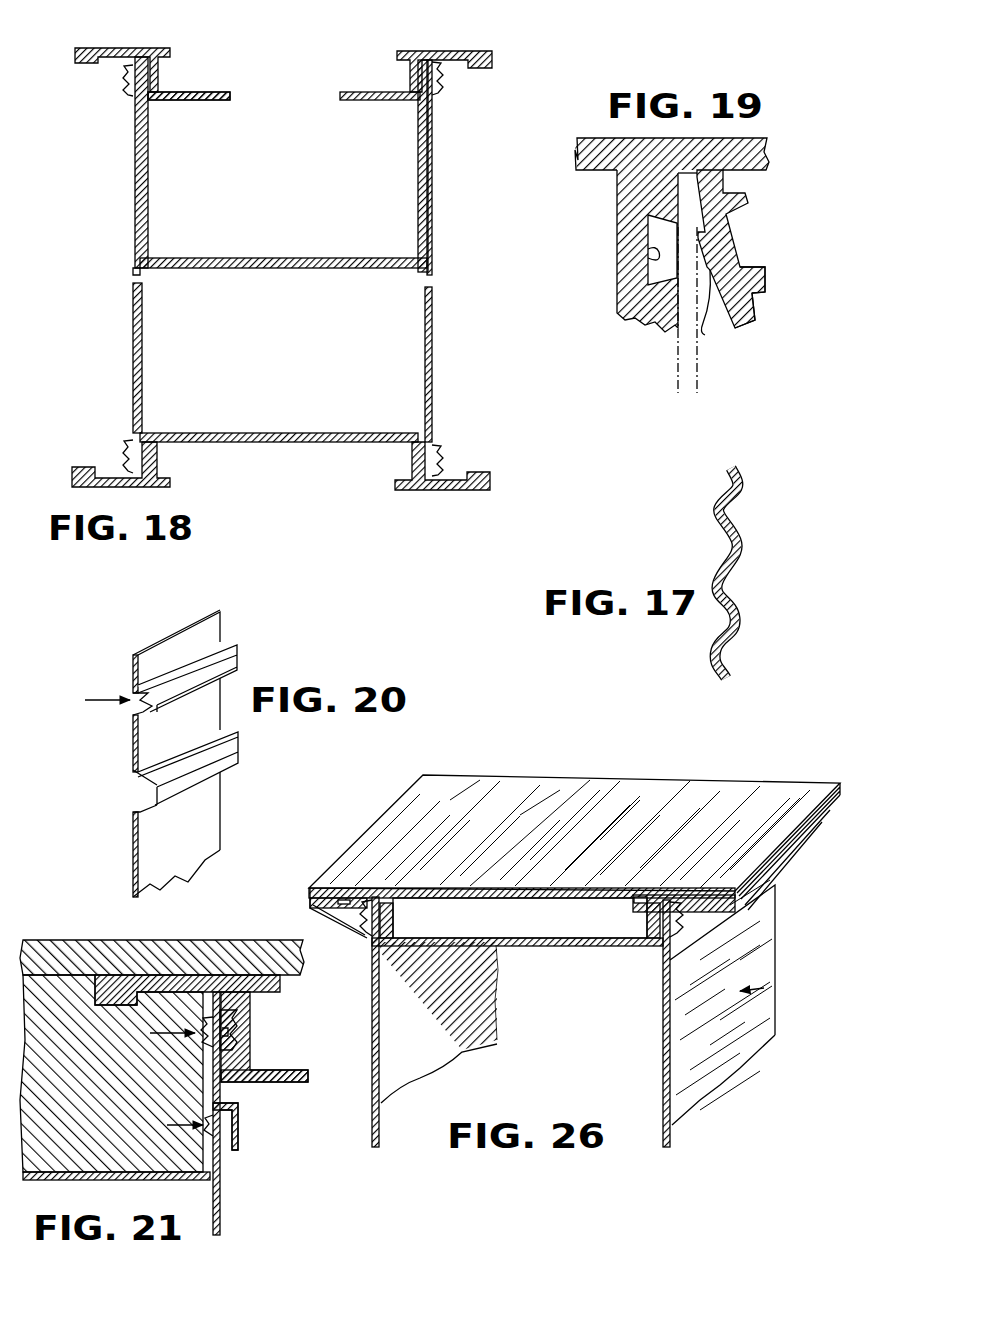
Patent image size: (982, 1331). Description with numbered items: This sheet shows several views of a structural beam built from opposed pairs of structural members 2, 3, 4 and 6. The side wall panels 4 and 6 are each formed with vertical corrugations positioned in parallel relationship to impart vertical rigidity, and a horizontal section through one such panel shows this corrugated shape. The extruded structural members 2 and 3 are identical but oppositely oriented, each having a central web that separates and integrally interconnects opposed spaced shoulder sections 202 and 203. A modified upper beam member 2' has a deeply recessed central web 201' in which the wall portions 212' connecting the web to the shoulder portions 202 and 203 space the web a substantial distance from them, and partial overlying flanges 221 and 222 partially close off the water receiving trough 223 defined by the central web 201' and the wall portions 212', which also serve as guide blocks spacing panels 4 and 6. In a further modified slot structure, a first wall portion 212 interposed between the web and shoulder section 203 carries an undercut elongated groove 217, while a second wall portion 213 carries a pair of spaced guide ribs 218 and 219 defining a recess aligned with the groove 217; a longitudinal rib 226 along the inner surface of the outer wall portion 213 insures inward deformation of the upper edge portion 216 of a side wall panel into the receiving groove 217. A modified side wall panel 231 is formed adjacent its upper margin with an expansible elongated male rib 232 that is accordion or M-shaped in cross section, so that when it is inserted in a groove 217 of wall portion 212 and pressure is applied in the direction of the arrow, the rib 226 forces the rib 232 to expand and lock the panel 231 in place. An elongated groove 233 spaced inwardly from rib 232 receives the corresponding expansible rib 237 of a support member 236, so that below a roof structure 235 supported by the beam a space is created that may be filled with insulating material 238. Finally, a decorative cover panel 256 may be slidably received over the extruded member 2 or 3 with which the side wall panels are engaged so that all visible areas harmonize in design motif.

In FIG. 19, the structural member 2 is at (557, 158).
In FIG. 21, the structural member 2 is at (271, 1062).
In FIG. 26, the structural member 2 is at (517, 964).
In FIG. 18, the upper beam structural member 2' is at (189, 70).
In FIG. 18, the structural member 3 is at (282, 432).
In FIG. 18, the side wall panel 4 is at (133, 350).
In FIG. 26, the side wall panel 4 is at (455, 1065).
In FIG. 17, the side wall panel 6 is at (735, 528).
In FIG. 18, the side wall panel 6 is at (434, 263).
In FIG. 26, the side wall panel 6 is at (668, 996).
In FIG. 18, the central web 201' is at (280, 247).
In FIG. 18, the shoulder section 202 is at (153, 47).
In FIG. 26, the shoulder section 202 is at (359, 900).
In FIG. 18, the shoulder section 203 is at (470, 51).
In FIG. 19, the shoulder section 203 is at (765, 140).
In FIG. 21, the shoulder section 203 is at (165, 985).
In FIG. 26, the shoulder section 203 is at (698, 900).
In FIG. 19, the first wall portion 212 is at (621, 251).
In FIG. 21, the first wall portion 212 is at (264, 1037).
In FIG. 26, the first wall portion 212 is at (520, 918).
In FIG. 18, the wall portion 212' is at (281, 164).
In FIG. 19, the second wall portion 213 is at (752, 319).
In FIG. 21, the second wall portion 213 is at (203, 1013).
In FIG. 26, the second wall portion 213 is at (368, 930).
In FIG. 19, the upper edge portion 216 is at (680, 345).
In FIG. 19, the elongated groove 217 is at (653, 252).
In FIG. 21, the elongated groove 217 is at (237, 1040).
In FIG. 19, the guide rib 218 is at (740, 202).
In FIG. 19, the guide rib 219 is at (767, 277).
In FIG. 18, the partial overlying flange 221 is at (200, 100).
In FIG. 18, the partial overlying flange 222 is at (373, 78).
In FIG. 18, the water receiving trough 223 is at (298, 176).
In FIG. 19, the longitudinal rib 226 is at (720, 317).
In FIG. 21, the longitudinal rib 226 is at (218, 1033).
In FIG. 20, the side wall panel 231 is at (133, 750).
In FIG. 21, the side wall panel 231 is at (222, 1092).
In FIG. 20, the expansible elongated male rib 232 is at (228, 662).
In FIG. 21, the expansible elongated male rib 232 is at (225, 1040).
In FIG. 20, the elongated groove 233 is at (140, 790).
In FIG. 21, the elongated groove 233 is at (238, 1130).
In FIG. 21, the roof structure 235 is at (104, 927).
In FIG. 21, the support member 236 is at (76, 1180).
In FIG. 21, the expansible rib 237 is at (213, 1130).
In FIG. 21, the insulating material 238 is at (78, 1100).
In FIG. 26, the decorative cover panel 256 is at (510, 779).